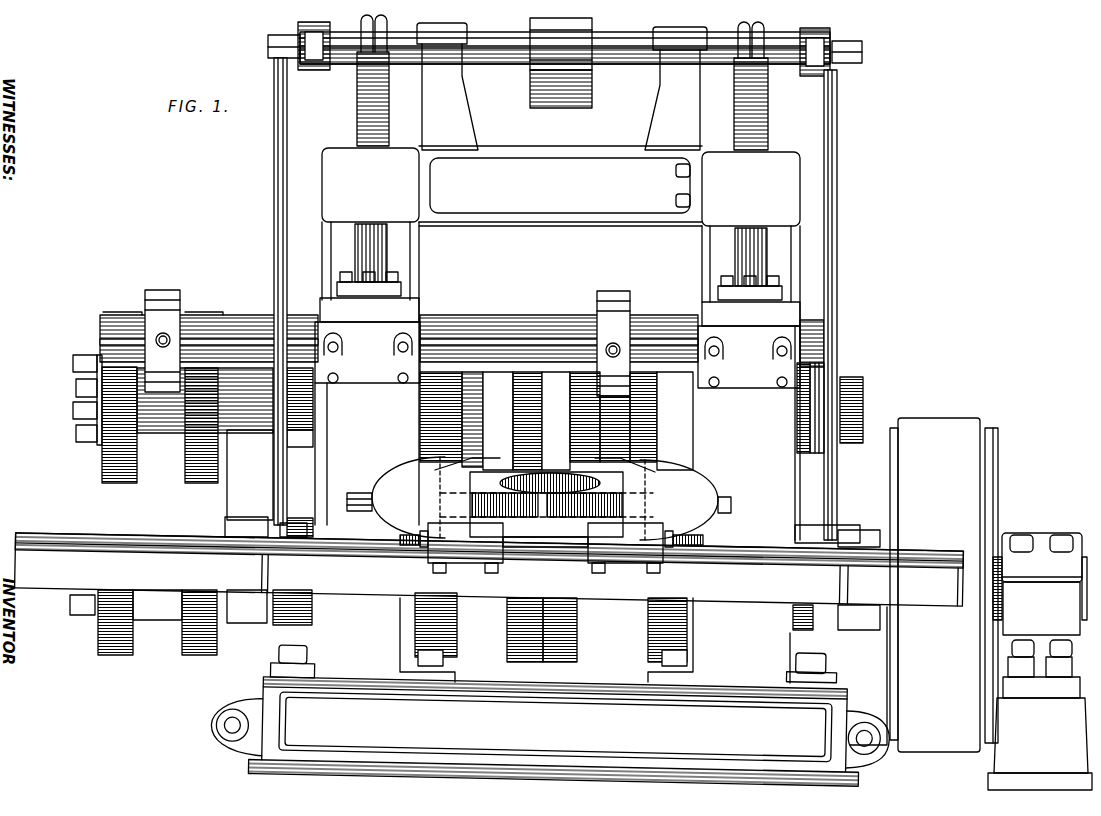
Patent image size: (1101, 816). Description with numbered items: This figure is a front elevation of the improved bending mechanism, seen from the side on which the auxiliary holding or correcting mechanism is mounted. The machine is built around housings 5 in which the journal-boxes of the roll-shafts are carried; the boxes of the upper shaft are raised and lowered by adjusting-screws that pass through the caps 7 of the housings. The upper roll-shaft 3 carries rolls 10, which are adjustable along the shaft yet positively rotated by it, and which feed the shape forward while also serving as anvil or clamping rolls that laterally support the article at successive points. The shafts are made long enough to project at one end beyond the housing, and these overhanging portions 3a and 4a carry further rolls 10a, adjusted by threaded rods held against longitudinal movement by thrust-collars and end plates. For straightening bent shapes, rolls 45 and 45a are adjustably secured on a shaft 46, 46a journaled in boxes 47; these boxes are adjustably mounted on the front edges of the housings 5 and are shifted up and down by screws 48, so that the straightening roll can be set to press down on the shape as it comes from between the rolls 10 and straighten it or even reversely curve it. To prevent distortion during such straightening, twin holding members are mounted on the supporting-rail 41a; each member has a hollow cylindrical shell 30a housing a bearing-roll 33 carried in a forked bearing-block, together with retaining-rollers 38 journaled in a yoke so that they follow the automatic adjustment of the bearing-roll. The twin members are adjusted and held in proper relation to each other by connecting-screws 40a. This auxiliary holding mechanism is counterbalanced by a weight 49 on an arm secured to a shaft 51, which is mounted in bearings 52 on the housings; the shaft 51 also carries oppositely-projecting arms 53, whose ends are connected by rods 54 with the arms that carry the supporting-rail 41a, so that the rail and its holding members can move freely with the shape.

The roll-shaft 3 is at (608, 438).
The overhanging portion of shaft 3a is at (250, 436).
The overhanging portion of shaft 4a is at (157, 598).
The housing 5 is at (420, 262).
The cap 7 is at (561, 186).
The roll 10 is at (546, 527).
The roll 10a is at (137, 452).
The hollow cylindrical shell 30a is at (539, 498).
The bearing-roll 33 is at (547, 505).
The retaining-roller 38 is at (545, 493).
The connecting-screw 40a is at (410, 545).
The supporting-rail 41a is at (362, 598).
The roll 45 is at (613, 293).
The roll 45a is at (165, 290).
The shaft 46 is at (531, 318).
The shaft 46a is at (240, 322).
The box 47 is at (560, 275).
The screw 48 is at (357, 112).
The weight 49 is at (530, 88).
The shaft 51 is at (642, 66).
The bearing 52 is at (562, 86).
The arm 53 is at (305, 74).
The rod 54 is at (274, 186).